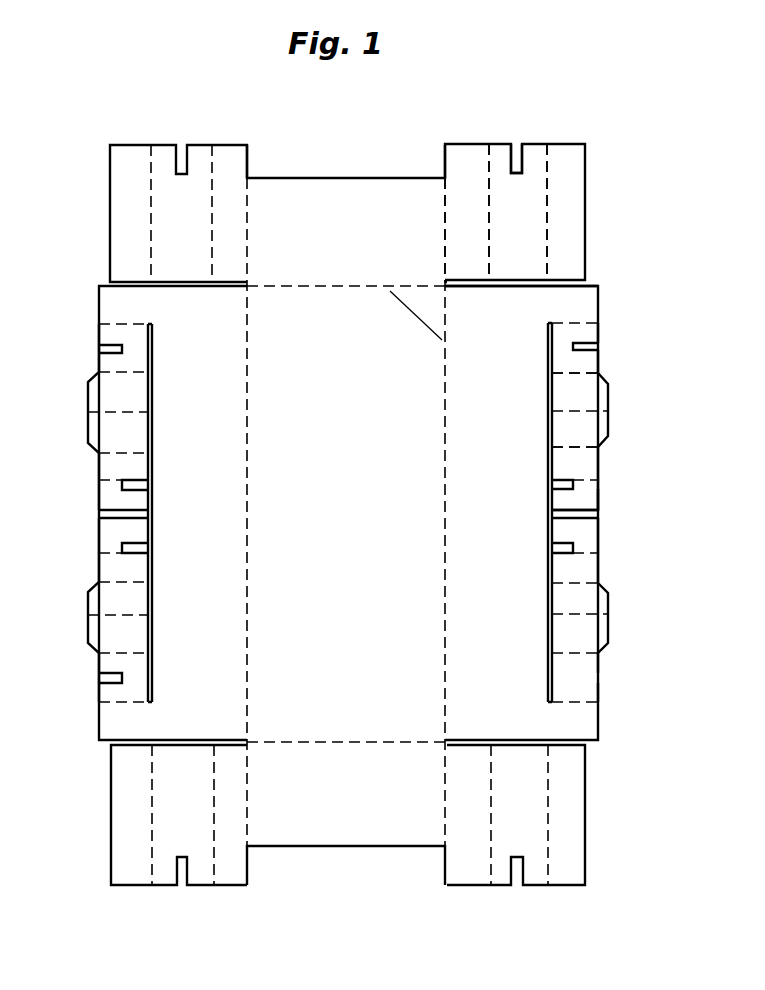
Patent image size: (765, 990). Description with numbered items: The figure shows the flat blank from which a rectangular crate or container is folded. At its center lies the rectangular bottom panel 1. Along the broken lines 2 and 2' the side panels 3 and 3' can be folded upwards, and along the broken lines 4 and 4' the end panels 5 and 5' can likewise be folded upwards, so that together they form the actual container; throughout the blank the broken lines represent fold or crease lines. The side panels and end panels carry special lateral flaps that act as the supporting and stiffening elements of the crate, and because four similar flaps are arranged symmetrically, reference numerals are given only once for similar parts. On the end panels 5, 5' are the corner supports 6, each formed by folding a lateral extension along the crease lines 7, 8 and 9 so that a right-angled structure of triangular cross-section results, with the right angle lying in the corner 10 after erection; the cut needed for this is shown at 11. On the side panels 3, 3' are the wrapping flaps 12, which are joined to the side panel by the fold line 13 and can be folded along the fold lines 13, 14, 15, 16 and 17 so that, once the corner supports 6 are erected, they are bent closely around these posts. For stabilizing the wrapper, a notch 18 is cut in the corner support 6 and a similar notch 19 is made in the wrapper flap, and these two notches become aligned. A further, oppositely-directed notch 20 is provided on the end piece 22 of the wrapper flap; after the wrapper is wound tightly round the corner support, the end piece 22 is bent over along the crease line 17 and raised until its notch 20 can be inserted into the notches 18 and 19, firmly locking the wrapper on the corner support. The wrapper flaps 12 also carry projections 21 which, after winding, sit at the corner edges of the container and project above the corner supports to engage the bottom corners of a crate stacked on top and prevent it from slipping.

The bottom panel 1 is at (341, 503).
The broken line 2 is at (461, 512).
The broken line 2' is at (226, 512).
The side panel 3 is at (540, 513).
The side panel 3' is at (149, 510).
The broken line 4 is at (346, 818).
The broken line 4' is at (346, 202).
The end panel 5 is at (346, 847).
The end panel 5' is at (346, 158).
The corner support 6 is at (170, 178).
The fold line 7 is at (548, 178).
The fold line 8 is at (490, 180).
The fold line 9 is at (447, 207).
The corner 10 is at (447, 285).
The cut 11 is at (580, 285).
The wrapping flap 12 is at (93, 378).
The fold line 13 is at (587, 322).
The fold line 14 is at (562, 375).
The fold line 15 is at (590, 412).
The fold line 16 is at (577, 450).
The fold line 17 is at (590, 478).
The notch 18 is at (518, 165).
The notch 19 is at (575, 346).
The notch 20 is at (560, 487).
The projection 21 is at (608, 613).
The end piece 22 is at (590, 490).